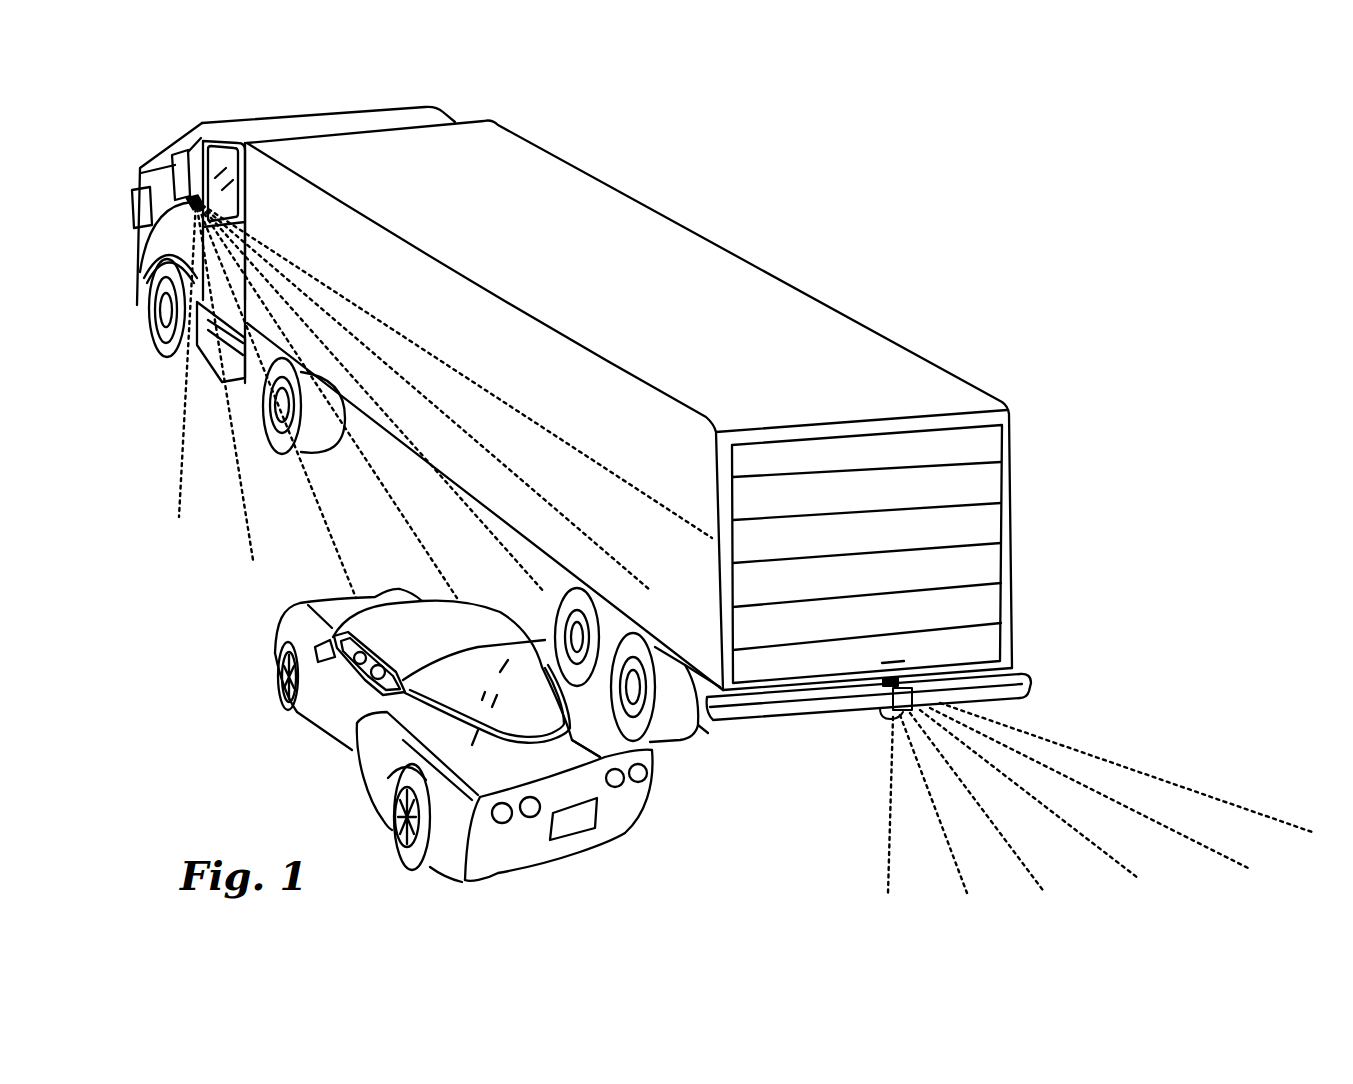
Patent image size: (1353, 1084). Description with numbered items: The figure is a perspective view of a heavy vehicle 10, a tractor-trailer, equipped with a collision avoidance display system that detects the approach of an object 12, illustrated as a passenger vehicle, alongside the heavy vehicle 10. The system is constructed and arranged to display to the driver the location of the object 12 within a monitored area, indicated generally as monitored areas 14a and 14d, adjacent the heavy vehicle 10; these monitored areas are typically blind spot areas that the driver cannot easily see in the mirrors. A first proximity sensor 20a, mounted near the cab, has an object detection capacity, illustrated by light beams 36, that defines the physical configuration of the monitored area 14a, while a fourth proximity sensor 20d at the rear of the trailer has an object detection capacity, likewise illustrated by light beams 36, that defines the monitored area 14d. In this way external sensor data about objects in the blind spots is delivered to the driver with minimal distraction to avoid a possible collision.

The heavy vehicle 10 is at (760, 280).
The object 12 is at (345, 732).
The monitored area 14a is at (162, 433).
The monitored area 14d is at (1058, 722).
The first proximity sensor 20a is at (138, 302).
The fourth proximity sensor 20d is at (872, 695).
The light beams 36 is at (245, 517).